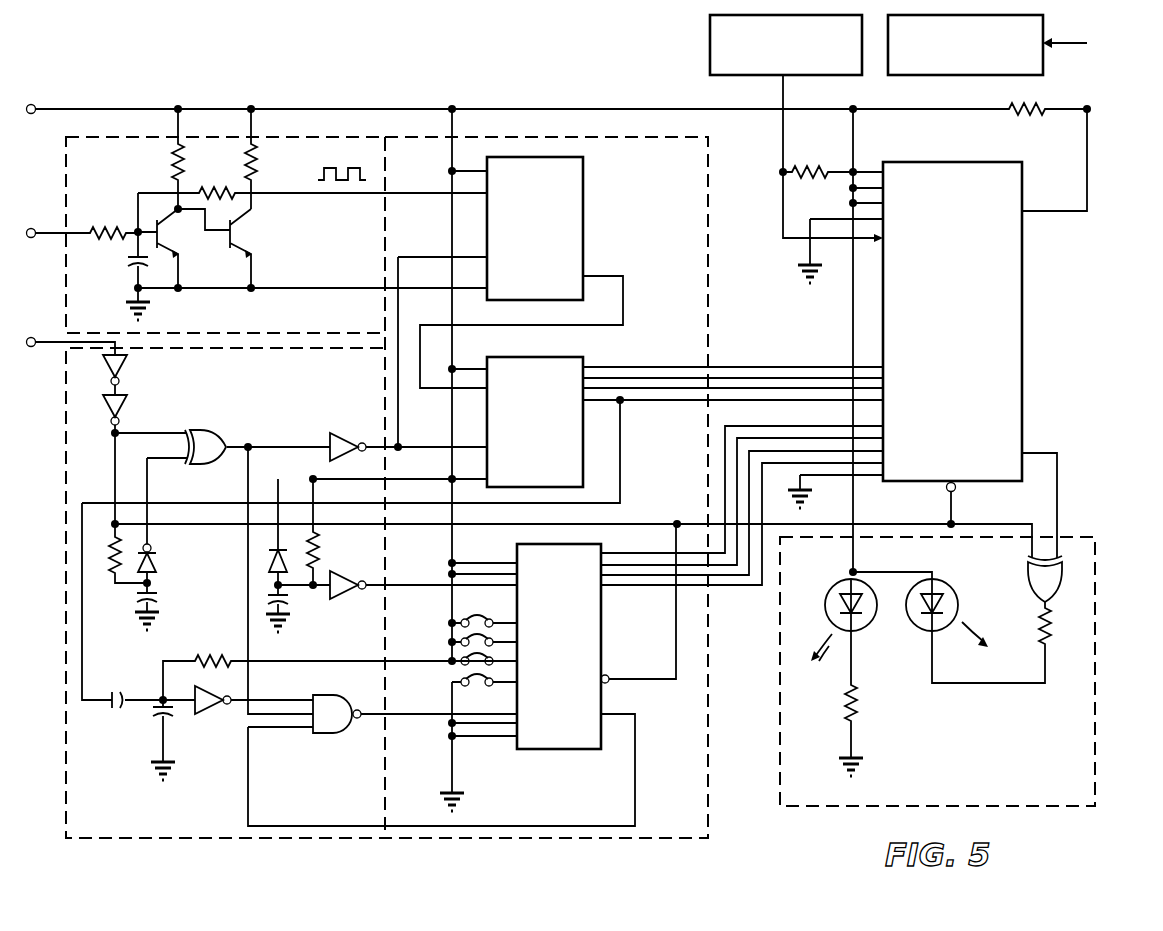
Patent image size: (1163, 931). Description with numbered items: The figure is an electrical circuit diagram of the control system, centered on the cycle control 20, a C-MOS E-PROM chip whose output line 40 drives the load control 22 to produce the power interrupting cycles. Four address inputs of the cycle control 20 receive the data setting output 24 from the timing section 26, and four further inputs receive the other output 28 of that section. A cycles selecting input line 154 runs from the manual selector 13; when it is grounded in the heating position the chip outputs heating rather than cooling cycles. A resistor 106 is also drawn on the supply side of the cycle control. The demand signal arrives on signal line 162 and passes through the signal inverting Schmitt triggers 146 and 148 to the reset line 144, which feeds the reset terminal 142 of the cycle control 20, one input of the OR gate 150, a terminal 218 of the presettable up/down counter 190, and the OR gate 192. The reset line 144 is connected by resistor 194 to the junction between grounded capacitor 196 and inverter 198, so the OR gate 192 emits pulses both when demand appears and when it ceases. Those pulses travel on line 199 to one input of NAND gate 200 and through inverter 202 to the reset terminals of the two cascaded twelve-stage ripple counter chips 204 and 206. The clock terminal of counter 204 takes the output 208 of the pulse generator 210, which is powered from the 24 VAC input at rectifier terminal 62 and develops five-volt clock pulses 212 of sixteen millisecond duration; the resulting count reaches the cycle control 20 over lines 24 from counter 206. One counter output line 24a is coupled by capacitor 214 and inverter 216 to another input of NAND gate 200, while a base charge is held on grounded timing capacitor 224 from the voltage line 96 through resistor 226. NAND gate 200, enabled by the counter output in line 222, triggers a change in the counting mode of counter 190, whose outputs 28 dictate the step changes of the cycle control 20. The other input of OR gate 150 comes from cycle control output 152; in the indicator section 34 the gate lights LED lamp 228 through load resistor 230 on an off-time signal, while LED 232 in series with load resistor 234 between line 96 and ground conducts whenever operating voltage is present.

The low voltage line 96 is at (36, 105).
The pulse generator 210 is at (293, 137).
The output of pulse generator 208 is at (306, 196).
The clock pulses 212 is at (379, 174).
The rectifier terminal 62 is at (32, 229).
The demand sensing signal line 162 is at (28, 339).
The signal inverting Schmitt trigger 146 is at (130, 366).
The signal inverting Schmitt trigger 148 is at (130, 405).
The OR gate 192 is at (210, 434).
The inverter 202 is at (337, 433).
The line 199 is at (248, 486).
The inverter 198 is at (151, 553).
The resistor 194 is at (114, 577).
The grounded capacitor 196 is at (154, 601).
The resistor 226 is at (190, 656).
The capacitor 214 is at (110, 716).
The grounded timing capacitor 224 is at (154, 720).
The inverter 216 is at (218, 719).
The NAND gate 200 is at (330, 738).
The counter output line 222 is at (555, 825).
The terminal of up/down counter 218 is at (608, 676).
The reset line 144 is at (626, 523).
The counter output line 24a is at (650, 404).
The output of timing section 28 is at (724, 427).
The data setting output 24 is at (744, 368).
The ripple counter chip 204 is at (510, 272).
The ripple counter chip 206 is at (448, 422).
The presettable up/down counter chip 190 is at (559, 646).
The cycle control 20 is at (910, 321).
The cycles selecting input line 154 is at (780, 135).
The manual selector 13 is at (710, 35).
The load control 22 is at (1043, 35).
The signal output line 40 is at (1087, 173).
The resistor 106 is at (1026, 112).
The reset terminal 142 is at (949, 484).
The output of cycle control chip 152 is at (1037, 453).
The indicator section 34 is at (1096, 537).
The LED 232 is at (870, 630).
The load resistor 234 is at (862, 706).
The LED lamp 228 is at (959, 598).
The OR gate 150 is at (1070, 581).
The load resistor 230 is at (1065, 625).
The timing section 26 is at (708, 794).